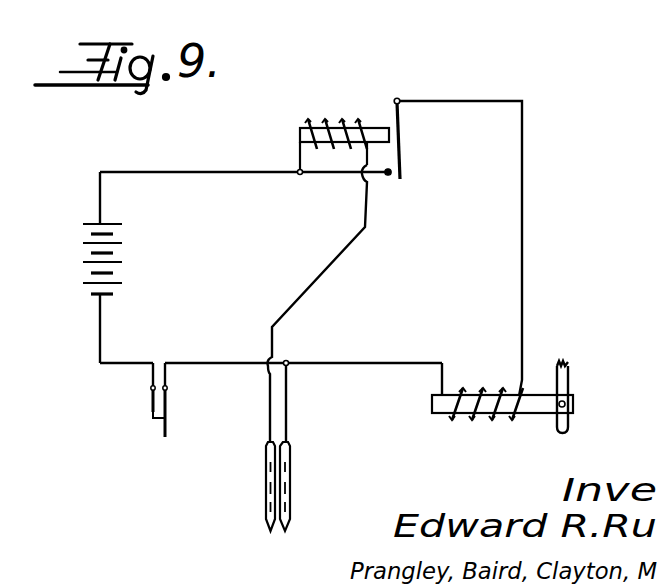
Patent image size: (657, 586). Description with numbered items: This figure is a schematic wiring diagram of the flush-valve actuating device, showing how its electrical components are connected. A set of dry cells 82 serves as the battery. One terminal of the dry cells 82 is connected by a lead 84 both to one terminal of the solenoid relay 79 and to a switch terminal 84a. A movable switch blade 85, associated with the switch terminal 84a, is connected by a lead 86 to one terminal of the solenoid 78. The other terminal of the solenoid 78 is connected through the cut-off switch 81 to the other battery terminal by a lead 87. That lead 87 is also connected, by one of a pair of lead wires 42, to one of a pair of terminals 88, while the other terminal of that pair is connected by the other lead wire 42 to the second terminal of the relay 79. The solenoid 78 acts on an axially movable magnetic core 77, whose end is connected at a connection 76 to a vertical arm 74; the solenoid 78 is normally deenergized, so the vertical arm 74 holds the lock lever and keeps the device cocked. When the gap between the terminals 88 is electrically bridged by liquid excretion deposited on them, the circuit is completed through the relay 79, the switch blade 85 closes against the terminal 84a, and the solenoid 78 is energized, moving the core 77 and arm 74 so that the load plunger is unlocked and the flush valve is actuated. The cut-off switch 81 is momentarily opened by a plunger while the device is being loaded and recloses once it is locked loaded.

The lead wires 42 is at (300, 415).
The vertical arm 74 is at (566, 381).
The connection 76 is at (566, 404).
The magnetic core 77 is at (537, 411).
The solenoid 78 is at (463, 425).
The solenoid relay 79 is at (318, 122).
The cut-off switch 81 is at (150, 418).
The dry cells 82 is at (78, 268).
The lead 84 is at (185, 171).
The switch terminal 84a is at (387, 179).
The movable switch blade 85 is at (402, 174).
The lead 86 is at (524, 197).
The lead 87 is at (312, 361).
The terminals 88 is at (290, 523).